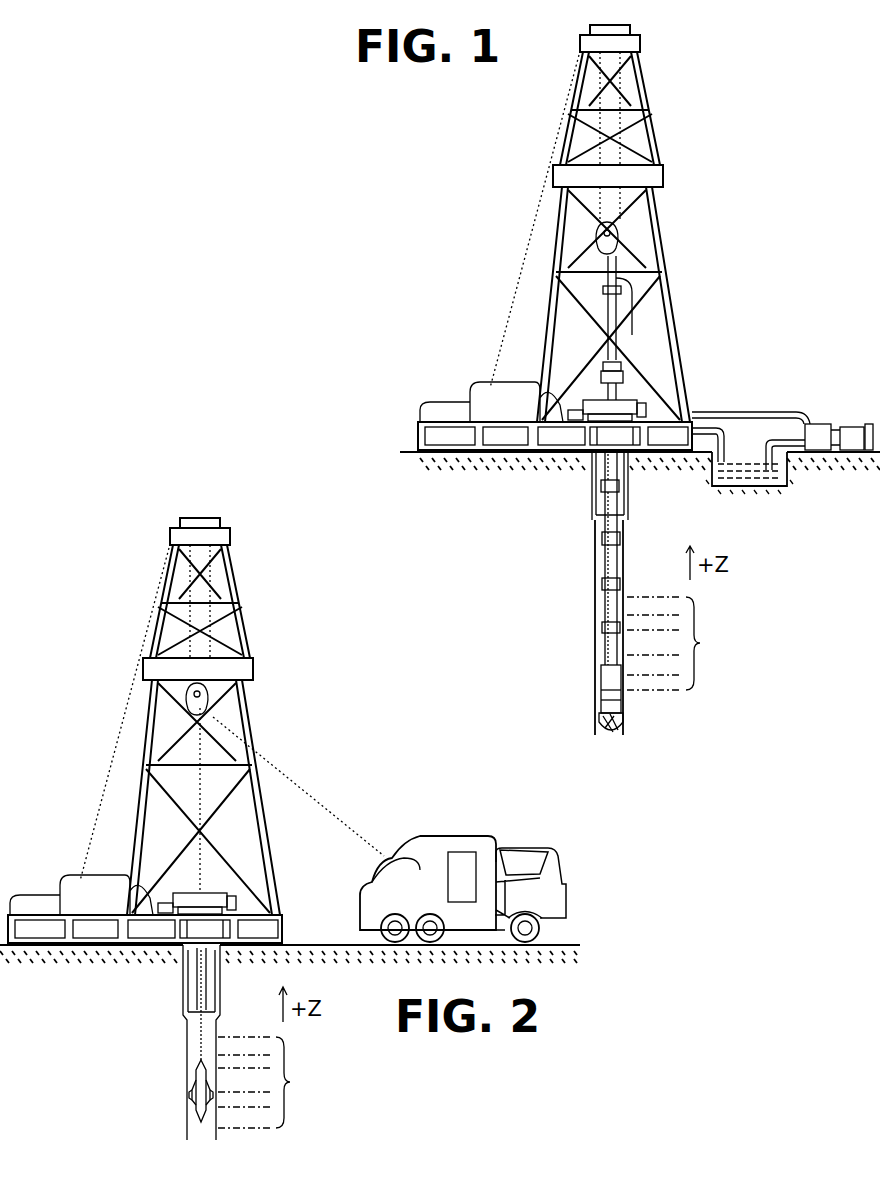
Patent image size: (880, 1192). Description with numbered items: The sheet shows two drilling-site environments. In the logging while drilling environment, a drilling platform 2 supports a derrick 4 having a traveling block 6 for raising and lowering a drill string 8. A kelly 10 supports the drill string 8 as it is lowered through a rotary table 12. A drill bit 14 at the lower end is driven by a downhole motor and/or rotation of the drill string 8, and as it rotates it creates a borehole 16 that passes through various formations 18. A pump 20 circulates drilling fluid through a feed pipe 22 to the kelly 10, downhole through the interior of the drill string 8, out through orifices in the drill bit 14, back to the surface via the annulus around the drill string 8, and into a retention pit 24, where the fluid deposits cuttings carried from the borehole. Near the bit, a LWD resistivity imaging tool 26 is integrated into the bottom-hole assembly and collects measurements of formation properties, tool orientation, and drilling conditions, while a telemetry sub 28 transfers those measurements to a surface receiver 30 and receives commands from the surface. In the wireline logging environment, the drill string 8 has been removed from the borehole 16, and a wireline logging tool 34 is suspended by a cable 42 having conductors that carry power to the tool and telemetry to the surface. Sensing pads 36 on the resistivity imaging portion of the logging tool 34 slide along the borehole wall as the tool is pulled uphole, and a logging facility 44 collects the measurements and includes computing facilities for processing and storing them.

In FIG. 1, the drilling platform 2 is at (420, 428).
In FIG. 2, the drilling platform 2 is at (156, 918).
In FIG. 1, the derrick 4 is at (651, 137).
In FIG. 2, the derrick 4 is at (191, 716).
In FIG. 1, the traveling block 6 is at (612, 240).
In FIG. 2, the traveling block 6 is at (238, 704).
In FIG. 1, the drill string 8 is at (612, 567).
In FIG. 1, the kelly 10 is at (612, 300).
In FIG. 1, the rotary table 12 is at (630, 405).
In FIG. 2, the rotary table 12 is at (236, 873).
In FIG. 1, the drill bit 14 is at (622, 722).
In FIG. 1, the borehole 16 is at (624, 572).
In FIG. 1, the formations 18 is at (678, 643).
In FIG. 2, the formations 18 is at (269, 1082).
In FIG. 1, the pump 20 is at (822, 424).
In FIG. 1, the feed pipe 22 is at (764, 412).
In FIG. 1, the retention pit 24 is at (716, 472).
In FIG. 1, the LWD resistivity imaging tool 26 is at (603, 700).
In FIG. 1, the telemetry sub 28 is at (601, 683).
In FIG. 1, the surface receiver 30 is at (616, 367).
In FIG. 2, the wireline logging tool 34 is at (192, 1082).
In FIG. 2, the sensing pads 36 is at (190, 1103).
In FIG. 2, the cable 42 is at (270, 766).
In FIG. 2, the logging facility 44 is at (426, 840).